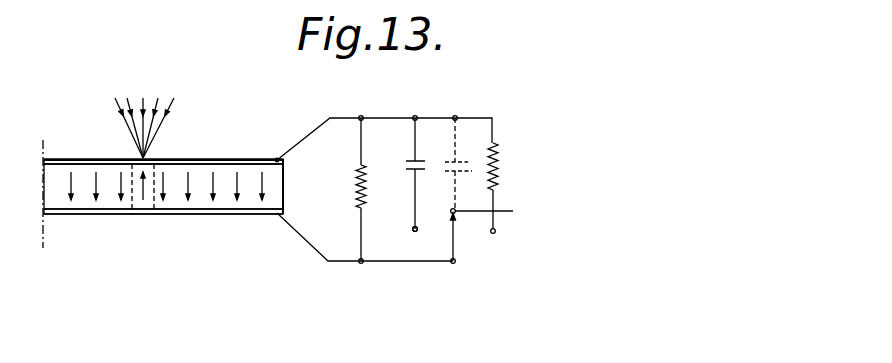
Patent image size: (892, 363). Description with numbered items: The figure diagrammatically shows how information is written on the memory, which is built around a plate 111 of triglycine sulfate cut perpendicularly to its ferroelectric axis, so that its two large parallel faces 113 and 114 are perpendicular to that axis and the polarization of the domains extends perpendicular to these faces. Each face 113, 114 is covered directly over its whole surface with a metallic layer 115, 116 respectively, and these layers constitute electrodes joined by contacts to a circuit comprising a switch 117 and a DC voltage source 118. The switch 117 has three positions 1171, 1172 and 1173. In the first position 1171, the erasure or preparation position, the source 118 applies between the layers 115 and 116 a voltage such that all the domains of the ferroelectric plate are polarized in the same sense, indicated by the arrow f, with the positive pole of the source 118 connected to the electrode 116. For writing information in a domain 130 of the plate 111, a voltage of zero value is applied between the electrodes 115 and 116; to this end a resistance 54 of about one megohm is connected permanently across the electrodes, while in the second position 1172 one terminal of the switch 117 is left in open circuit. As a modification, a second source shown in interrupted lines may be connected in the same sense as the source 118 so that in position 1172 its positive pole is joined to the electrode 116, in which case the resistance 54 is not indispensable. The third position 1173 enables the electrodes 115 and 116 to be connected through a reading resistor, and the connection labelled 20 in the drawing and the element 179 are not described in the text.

The plate 111 is at (58, 192).
The face 113 is at (196, 158).
The face 114 is at (214, 220).
The metallic layer 115 is at (97, 161).
The metallic layer 116 is at (116, 213).
The domain 130 is at (148, 192).
The arrow f is at (262, 174).
The resistance 54 is at (361, 198).
The DC voltage source 118 is at (413, 168).
The variable capacitor (shown dashed) 179 is at (457, 163).
The resistor 20 is at (496, 158).
The switch 117 is at (464, 243).
The first position 1171 is at (414, 231).
The second position 1172 is at (510, 217).
The third position 1173 is at (495, 233).